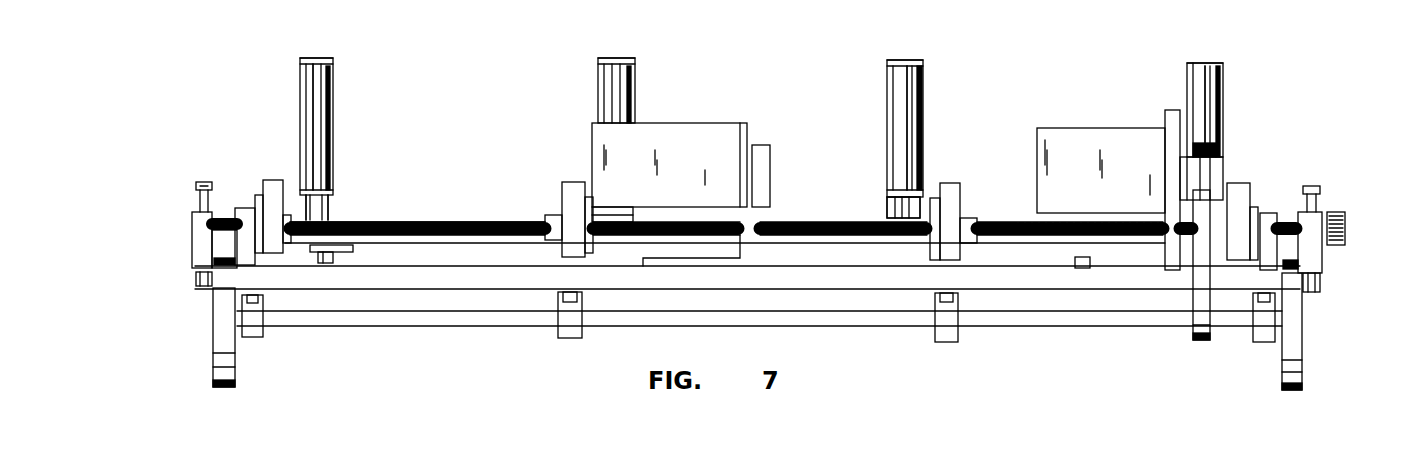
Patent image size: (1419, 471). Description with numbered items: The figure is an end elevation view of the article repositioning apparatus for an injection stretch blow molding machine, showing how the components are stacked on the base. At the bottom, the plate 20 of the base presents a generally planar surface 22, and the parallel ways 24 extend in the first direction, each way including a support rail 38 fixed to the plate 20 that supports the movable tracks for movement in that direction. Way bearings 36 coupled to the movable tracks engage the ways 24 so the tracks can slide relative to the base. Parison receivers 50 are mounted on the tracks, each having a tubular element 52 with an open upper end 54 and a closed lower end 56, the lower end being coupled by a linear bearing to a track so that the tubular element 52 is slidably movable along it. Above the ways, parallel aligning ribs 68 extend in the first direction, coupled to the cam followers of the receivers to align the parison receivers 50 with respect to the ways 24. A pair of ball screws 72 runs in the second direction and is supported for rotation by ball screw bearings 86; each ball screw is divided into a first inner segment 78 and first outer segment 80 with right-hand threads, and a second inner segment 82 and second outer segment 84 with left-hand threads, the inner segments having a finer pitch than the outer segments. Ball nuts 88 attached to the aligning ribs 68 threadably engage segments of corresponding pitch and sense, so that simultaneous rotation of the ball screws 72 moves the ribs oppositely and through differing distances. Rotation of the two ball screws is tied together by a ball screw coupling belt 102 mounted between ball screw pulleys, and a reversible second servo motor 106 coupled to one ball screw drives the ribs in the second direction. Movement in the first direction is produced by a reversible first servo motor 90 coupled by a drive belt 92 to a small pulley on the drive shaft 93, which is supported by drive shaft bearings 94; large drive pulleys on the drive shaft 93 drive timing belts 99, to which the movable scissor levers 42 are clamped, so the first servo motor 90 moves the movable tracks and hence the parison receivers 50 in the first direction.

The plate 20 is at (990, 280).
The generally planar surface 22 is at (1045, 263).
The ways 24 is at (320, 265).
The way bearings 36 is at (340, 256).
The support rail 38 is at (324, 265).
The movable scissor levers 42 is at (200, 207).
The parison receivers 50 is at (300, 58).
The tubular element 52 is at (333, 97).
The open upper end 54 is at (322, 58).
The closed lower end 56 is at (340, 205).
The aligning ribs 68 is at (273, 184).
The ball screws 72 is at (493, 222).
The first inner segment 78 is at (633, 222).
The first outer segment 80 is at (412, 220).
The second inner segment 82 is at (798, 220).
The second outer segment 84 is at (1022, 222).
The ball screw bearings 86 is at (245, 205).
The ball nuts 88 is at (289, 213).
The first servo motor 90 is at (1093, 150).
The drive belt 92 is at (1200, 340).
The drive shaft 93 is at (435, 322).
The drive shaft bearings 94 is at (566, 334).
The timing belt 99 is at (230, 346).
The ball screw coupling belt 102 is at (1345, 242).
The second servo motor 106 is at (652, 138).